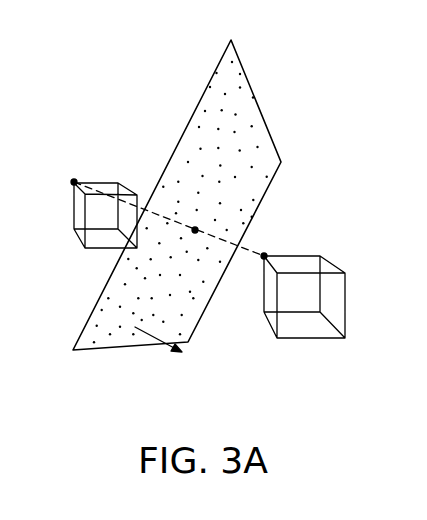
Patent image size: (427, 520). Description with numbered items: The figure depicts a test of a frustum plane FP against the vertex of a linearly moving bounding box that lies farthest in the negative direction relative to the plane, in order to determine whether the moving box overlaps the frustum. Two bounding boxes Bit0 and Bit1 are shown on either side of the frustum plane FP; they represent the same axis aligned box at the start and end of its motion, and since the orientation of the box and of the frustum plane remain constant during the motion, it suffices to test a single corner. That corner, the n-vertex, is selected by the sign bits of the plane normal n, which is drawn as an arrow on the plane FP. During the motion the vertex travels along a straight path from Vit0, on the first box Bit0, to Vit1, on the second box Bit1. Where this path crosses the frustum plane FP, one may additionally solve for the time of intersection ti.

The frustum plane FP is at (255, 95).
The vertex at start of motion Vit0 is at (74, 182).
The bounding box at start of motion Bit0 is at (80, 240).
The time of intersection ti is at (196, 229).
The vertex at end of motion Vit1 is at (266, 255).
The bounding box at end of motion Bit1 is at (311, 340).
The plane normal n is at (166, 345).